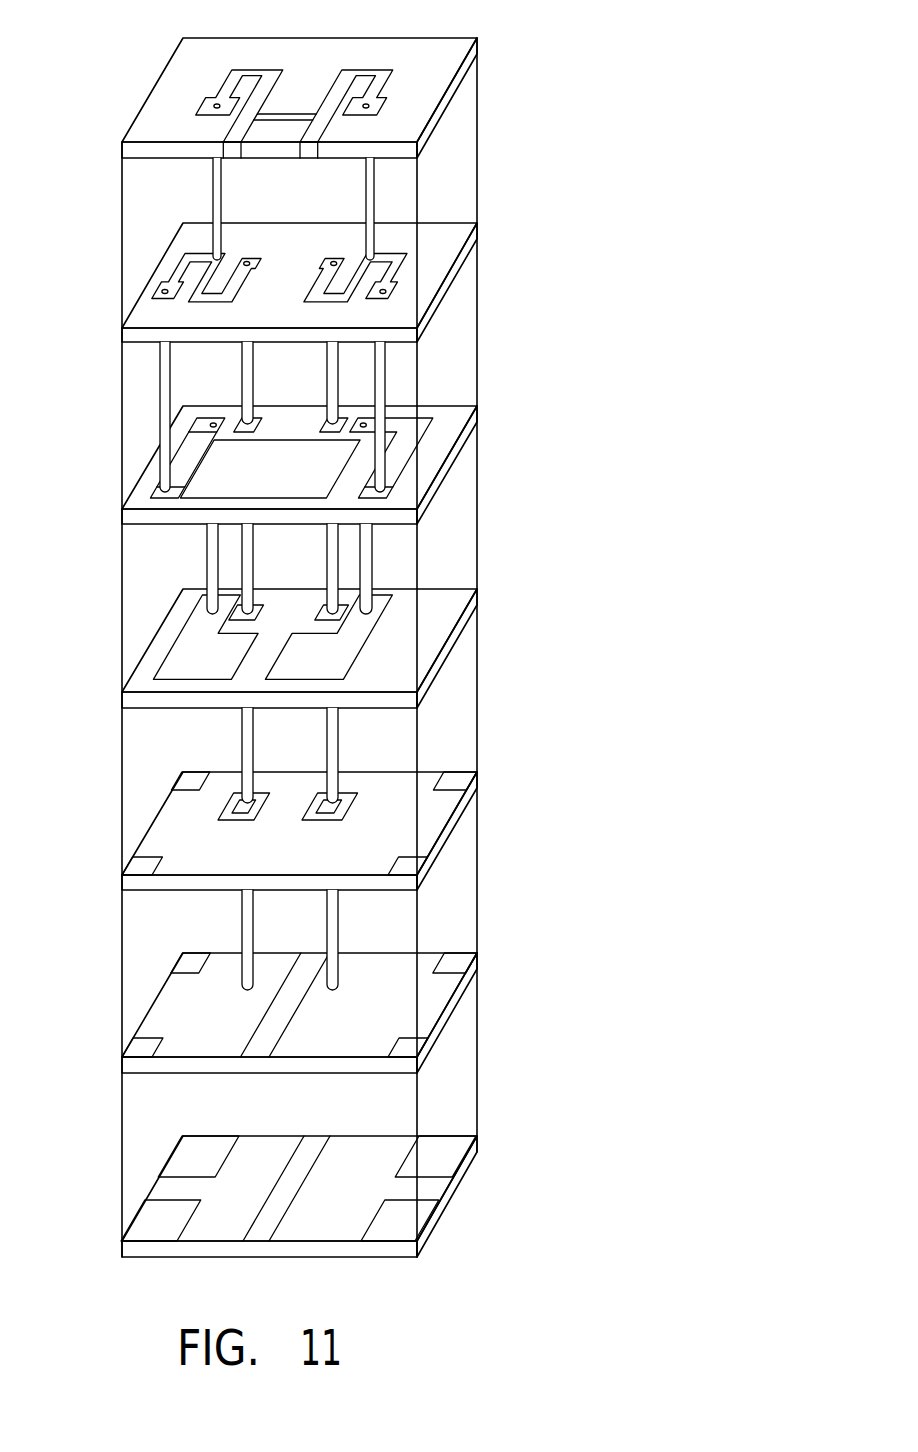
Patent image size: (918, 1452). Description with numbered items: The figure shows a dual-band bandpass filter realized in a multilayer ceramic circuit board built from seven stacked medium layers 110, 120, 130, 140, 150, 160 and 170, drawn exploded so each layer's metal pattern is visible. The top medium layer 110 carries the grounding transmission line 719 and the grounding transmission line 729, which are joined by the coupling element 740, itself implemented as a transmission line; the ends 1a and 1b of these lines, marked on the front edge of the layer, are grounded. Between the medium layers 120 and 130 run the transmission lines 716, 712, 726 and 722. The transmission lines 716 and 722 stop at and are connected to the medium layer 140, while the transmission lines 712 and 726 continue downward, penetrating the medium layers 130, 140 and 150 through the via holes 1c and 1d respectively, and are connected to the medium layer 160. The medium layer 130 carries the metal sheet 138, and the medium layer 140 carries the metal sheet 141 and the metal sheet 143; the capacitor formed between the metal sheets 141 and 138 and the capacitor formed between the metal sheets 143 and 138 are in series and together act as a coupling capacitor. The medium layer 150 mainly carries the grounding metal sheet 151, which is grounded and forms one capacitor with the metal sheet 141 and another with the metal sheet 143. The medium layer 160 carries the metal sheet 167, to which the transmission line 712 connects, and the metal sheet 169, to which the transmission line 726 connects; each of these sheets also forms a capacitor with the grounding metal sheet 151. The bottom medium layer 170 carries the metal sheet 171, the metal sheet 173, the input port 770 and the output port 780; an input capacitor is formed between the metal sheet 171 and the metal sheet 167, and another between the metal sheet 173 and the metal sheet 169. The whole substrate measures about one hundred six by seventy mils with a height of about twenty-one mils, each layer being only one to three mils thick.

The medium layer 110 is at (477, 40).
The medium layer 120 is at (477, 225).
The medium layer 130 is at (477, 408).
The metal sheet 138 is at (315, 472).
The medium layer 140 is at (477, 591).
The metal sheet 141 is at (167, 653).
The metal sheet 143 is at (370, 633).
The medium layer 150 is at (477, 774).
The grounding metal sheet 151 is at (173, 830).
The medium layer 160 is at (477, 955).
The metal sheet 167 is at (173, 1003).
The metal sheet 169 is at (420, 1000).
The medium layer 170 is at (477, 1138).
The metal sheet 171 is at (228, 1228).
The metal sheet 173 is at (328, 1226).
The transmission line 712 is at (242, 372).
The transmission line 716 is at (160, 404).
The grounding transmission line 719 is at (258, 66).
The transmission line 722 is at (386, 380).
The transmission line 726 is at (338, 357).
The grounding transmission line 729 is at (374, 66).
The coupling element 740 is at (289, 118).
The input port 770 is at (152, 1186).
The output port 780 is at (448, 1188).
The end 1a is at (232, 160).
The end 1b is at (302, 160).
The via hole 1c is at (258, 251).
The via hole 1d is at (331, 262).